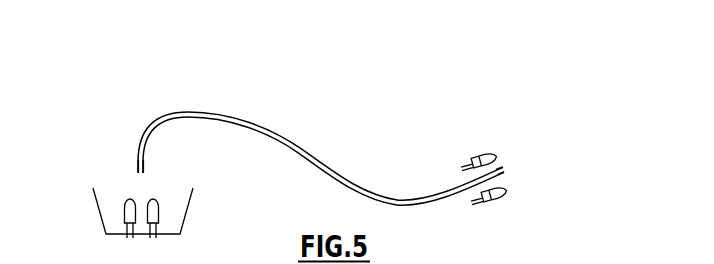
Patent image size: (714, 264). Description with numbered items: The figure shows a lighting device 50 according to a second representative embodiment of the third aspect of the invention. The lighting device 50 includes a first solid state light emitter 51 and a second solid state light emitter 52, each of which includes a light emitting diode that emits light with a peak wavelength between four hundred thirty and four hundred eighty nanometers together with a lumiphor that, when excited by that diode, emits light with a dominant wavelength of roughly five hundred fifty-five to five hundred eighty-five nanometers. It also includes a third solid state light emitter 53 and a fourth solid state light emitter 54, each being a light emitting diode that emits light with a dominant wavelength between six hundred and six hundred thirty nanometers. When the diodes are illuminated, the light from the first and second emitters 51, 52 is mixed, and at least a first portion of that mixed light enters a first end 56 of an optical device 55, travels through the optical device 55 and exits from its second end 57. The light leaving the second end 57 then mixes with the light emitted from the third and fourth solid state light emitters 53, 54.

The lighting device 50 is at (377, 113).
The first solid state light emitter 51 is at (124, 215).
The second solid state light emitter 52 is at (158, 215).
The third solid state light emitter 53 is at (498, 200).
The fourth solid state light emitter 54 is at (485, 154).
The optical device 55 is at (311, 156).
The first end 56 is at (145, 165).
The second end 57 is at (502, 167).